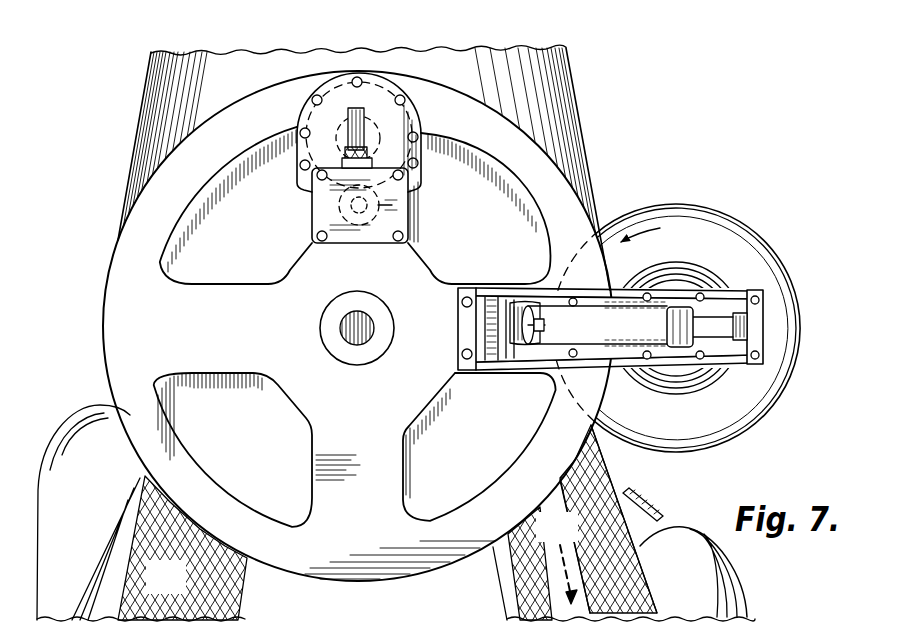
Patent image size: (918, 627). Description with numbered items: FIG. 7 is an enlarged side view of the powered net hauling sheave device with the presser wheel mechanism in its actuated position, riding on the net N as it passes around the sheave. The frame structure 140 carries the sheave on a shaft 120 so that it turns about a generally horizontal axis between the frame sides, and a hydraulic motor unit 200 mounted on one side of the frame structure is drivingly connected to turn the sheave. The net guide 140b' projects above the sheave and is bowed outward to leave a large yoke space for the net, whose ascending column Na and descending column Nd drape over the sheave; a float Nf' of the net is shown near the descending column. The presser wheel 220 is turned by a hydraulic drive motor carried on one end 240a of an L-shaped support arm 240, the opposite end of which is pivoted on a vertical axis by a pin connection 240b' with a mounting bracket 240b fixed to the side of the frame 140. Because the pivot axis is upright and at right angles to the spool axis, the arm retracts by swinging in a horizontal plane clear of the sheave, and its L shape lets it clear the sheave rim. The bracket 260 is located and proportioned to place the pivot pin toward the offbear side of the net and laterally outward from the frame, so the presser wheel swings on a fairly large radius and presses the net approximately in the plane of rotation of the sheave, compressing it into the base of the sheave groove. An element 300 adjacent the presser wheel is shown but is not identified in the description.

The frame structure 140 is at (112, 247).
The net guide 140b' is at (364, 153).
The shaft 120 is at (348, 326).
The hydraulic motor unit 200 is at (312, 207).
The presser wheel 220 is at (762, 229).
The L-shaped support arm 240 is at (624, 375).
The arm end 240a is at (765, 300).
The mounting bracket 240b is at (466, 341).
The pin connection 240b' is at (430, 315).
The bracket 260 is at (573, 326).
The band 300 is at (727, 438).
The net N is at (289, 613).
The ascending column of net Na is at (178, 588).
The descending column of net Nd is at (570, 538).
The float Nf' is at (715, 552).